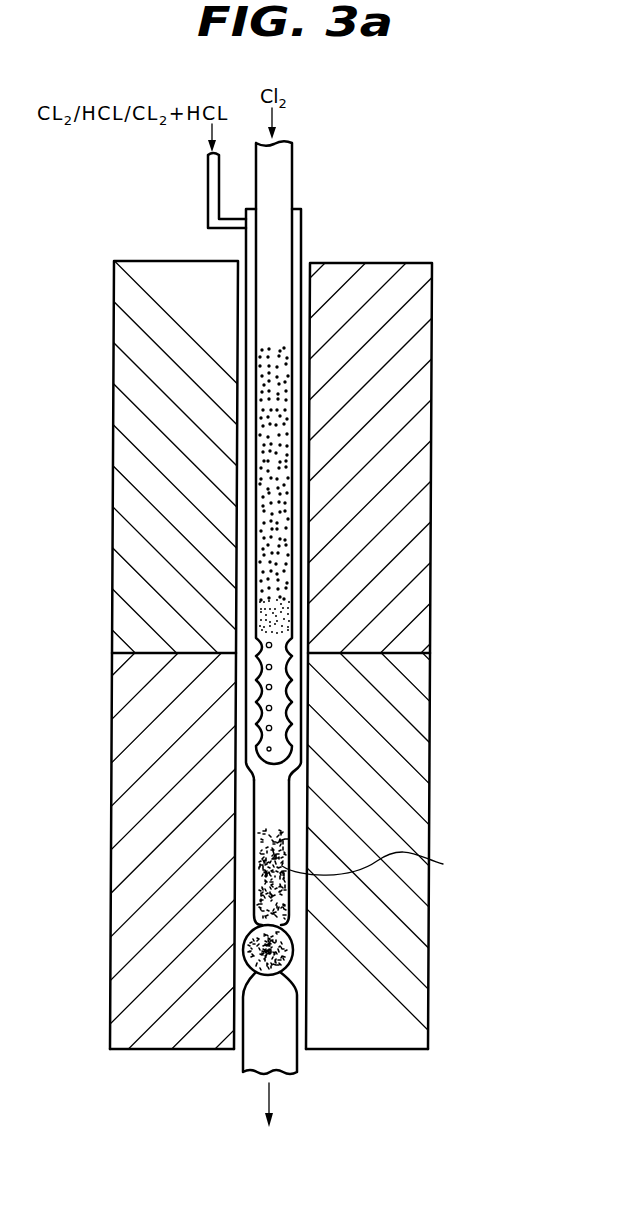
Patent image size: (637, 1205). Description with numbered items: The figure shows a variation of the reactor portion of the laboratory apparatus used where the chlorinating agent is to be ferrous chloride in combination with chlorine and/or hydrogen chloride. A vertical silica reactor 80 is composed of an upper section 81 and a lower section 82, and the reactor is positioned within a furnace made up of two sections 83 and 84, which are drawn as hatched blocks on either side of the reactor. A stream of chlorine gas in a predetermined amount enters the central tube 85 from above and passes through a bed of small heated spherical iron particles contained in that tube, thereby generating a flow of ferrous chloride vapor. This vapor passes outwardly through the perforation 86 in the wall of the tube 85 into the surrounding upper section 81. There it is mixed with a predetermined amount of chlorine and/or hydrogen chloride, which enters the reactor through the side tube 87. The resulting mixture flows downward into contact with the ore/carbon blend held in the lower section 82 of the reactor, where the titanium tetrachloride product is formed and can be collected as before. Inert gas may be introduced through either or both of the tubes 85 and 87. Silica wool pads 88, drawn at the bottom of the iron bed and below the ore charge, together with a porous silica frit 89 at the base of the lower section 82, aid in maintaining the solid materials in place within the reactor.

The vertical silica reactor 80 is at (348, 607).
The upper section 81 is at (302, 235).
The lower section 82 is at (290, 803).
The furnace section 83 is at (318, 655).
The furnace section 84 is at (318, 851).
The tube 85 is at (293, 171).
The perforation 86 is at (273, 708).
The tube 87 is at (207, 183).
The silica wool pad 88 is at (277, 628).
The porous silica frit 89 is at (283, 927).